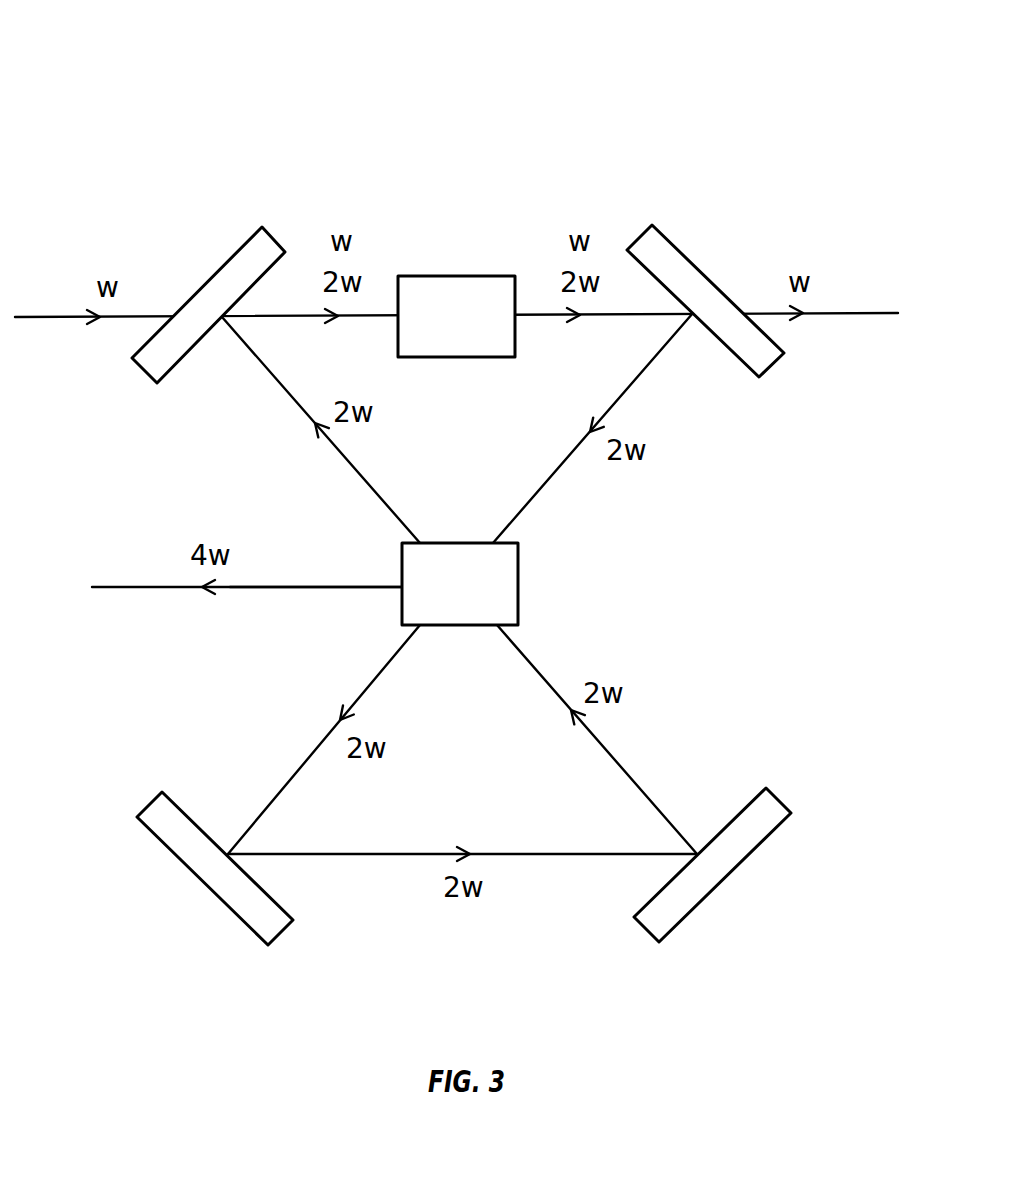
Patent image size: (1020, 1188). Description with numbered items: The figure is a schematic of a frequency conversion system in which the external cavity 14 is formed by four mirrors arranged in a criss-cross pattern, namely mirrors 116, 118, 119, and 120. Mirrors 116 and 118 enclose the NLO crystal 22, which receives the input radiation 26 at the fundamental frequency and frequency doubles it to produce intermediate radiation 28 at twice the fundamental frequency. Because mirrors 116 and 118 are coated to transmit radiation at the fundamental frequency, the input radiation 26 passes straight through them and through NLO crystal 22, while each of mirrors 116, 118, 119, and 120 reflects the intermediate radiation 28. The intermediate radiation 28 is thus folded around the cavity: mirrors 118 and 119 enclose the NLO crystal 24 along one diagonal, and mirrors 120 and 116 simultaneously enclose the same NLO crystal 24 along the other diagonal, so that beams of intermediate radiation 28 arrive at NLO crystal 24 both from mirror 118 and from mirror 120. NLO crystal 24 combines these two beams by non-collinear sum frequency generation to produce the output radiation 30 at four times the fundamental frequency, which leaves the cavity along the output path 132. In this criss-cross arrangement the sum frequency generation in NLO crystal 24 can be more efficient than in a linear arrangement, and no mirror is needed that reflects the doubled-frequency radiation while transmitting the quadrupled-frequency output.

The external cavity 14 is at (104, 43).
The NLO crystal 22 is at (457, 275).
The NLO crystal 24 is at (440, 543).
The input radiation 26 is at (83, 317).
The intermediate radiation 28 is at (613, 316).
The output radiation 30 is at (185, 587).
The mirror 116 is at (248, 238).
The mirror 118 is at (663, 233).
The mirror 119 is at (147, 802).
The mirror 120 is at (780, 798).
The output path 132 is at (250, 587).